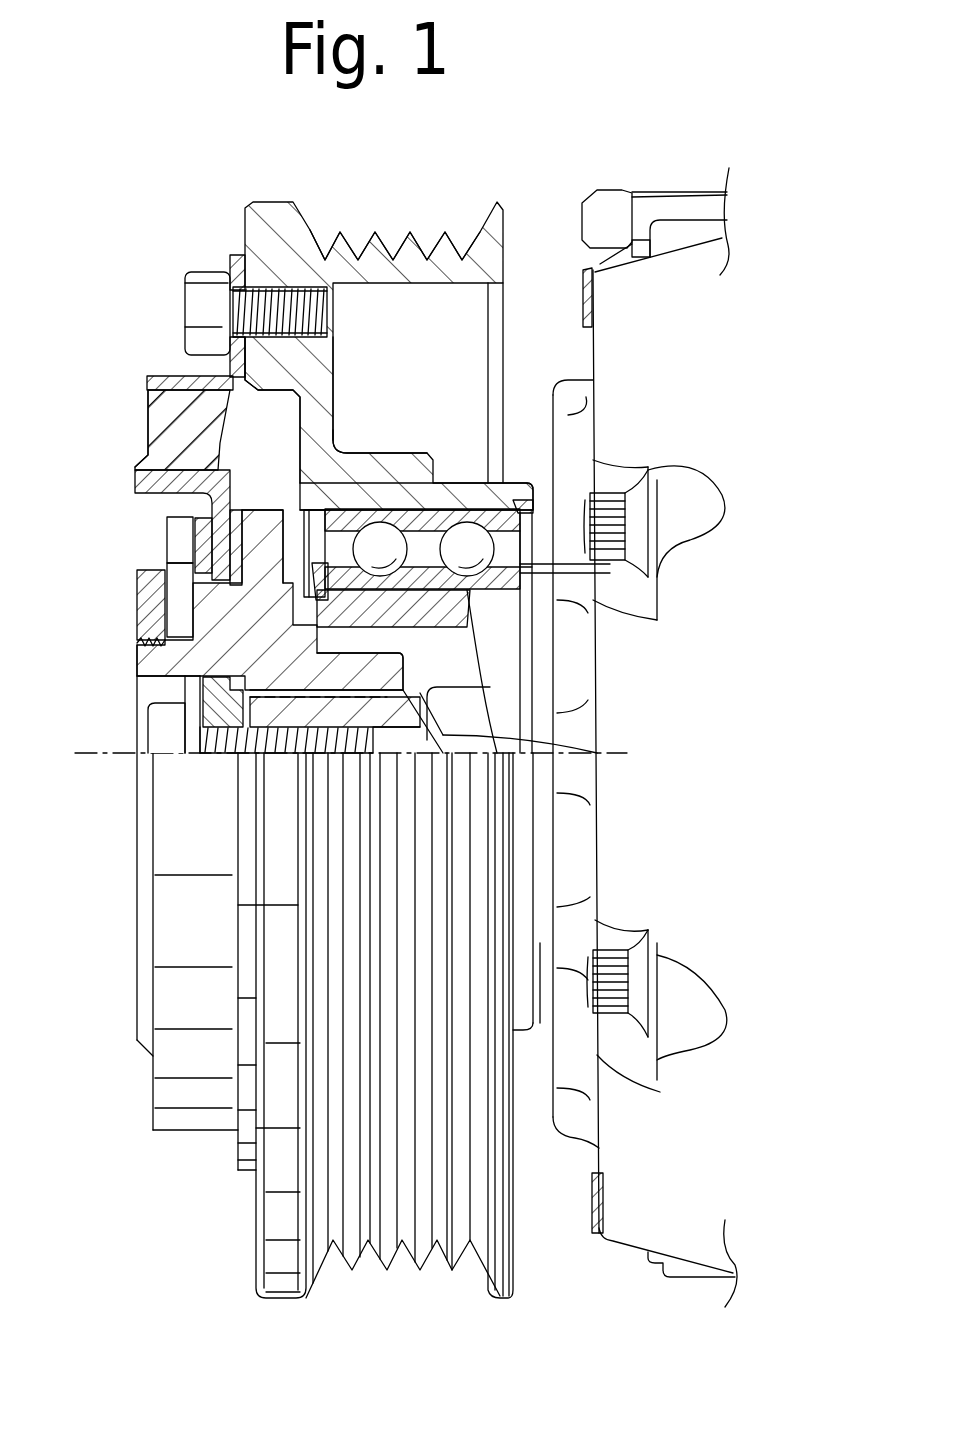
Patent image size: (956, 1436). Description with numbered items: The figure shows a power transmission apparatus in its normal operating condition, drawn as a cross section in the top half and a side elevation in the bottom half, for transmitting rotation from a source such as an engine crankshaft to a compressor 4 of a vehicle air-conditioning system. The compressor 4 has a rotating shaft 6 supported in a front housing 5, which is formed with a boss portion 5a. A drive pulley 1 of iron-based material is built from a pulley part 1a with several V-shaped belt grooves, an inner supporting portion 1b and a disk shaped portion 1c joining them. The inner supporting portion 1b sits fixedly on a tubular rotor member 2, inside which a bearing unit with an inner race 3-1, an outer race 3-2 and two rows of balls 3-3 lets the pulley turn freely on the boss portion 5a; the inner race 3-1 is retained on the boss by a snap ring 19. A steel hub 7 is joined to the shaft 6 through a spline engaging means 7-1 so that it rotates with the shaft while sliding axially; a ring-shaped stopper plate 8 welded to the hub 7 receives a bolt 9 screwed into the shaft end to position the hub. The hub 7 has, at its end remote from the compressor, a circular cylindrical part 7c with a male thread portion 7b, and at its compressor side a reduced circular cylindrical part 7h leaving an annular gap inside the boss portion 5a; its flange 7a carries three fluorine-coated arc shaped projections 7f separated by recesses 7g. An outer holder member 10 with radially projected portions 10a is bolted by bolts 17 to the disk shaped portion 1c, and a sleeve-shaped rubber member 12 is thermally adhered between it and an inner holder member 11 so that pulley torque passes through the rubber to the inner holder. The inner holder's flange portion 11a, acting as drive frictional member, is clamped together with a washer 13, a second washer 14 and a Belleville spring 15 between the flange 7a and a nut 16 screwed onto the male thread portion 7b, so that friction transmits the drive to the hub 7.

The drive pulley 1 is at (272, 200).
The pulley part 1a is at (358, 228).
The inner supporting portion 1b is at (385, 470).
The disk shaped portion 1c is at (318, 388).
The rotor member 2 is at (468, 485).
The inner race 3-1 is at (597, 585).
The outer race 3-2 is at (520, 482).
The balls 3-3 is at (505, 548).
The compressor 4 is at (643, 718).
The front housing 5 is at (617, 707).
The boss portion 5a is at (430, 623).
The rotating shaft 6 is at (597, 753).
The hub 7 is at (187, 687).
The spline engaging means 7-1 is at (322, 698).
The flange 7a is at (152, 395).
The male thread portion 7b is at (137, 662).
The circular cylindrical part 7c is at (160, 680).
The arc shaped projections 7f is at (150, 440).
The recesses 7g is at (277, 515).
The circular cylindrical part of reduced diameter 7h is at (430, 677).
The stopper plate 8 is at (163, 717).
The bolt 9 is at (148, 722).
The outer holder member 10 is at (170, 378).
The projected portions 10a is at (237, 265).
The inner holder member 11 is at (140, 483).
The flange portion 11a is at (236, 545).
The rubber member 12 is at (185, 395).
The washer 13 is at (160, 510).
The washer 14 is at (135, 500).
The Belleville spring 15 is at (200, 570).
The nut 16 is at (150, 590).
The bolts 17 is at (205, 290).
The snap ring 19 is at (343, 478).